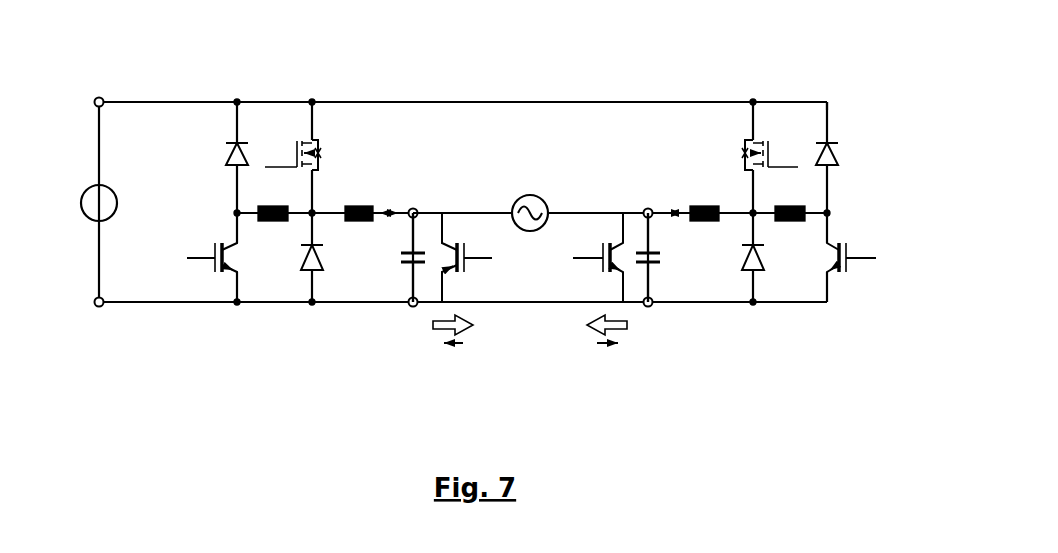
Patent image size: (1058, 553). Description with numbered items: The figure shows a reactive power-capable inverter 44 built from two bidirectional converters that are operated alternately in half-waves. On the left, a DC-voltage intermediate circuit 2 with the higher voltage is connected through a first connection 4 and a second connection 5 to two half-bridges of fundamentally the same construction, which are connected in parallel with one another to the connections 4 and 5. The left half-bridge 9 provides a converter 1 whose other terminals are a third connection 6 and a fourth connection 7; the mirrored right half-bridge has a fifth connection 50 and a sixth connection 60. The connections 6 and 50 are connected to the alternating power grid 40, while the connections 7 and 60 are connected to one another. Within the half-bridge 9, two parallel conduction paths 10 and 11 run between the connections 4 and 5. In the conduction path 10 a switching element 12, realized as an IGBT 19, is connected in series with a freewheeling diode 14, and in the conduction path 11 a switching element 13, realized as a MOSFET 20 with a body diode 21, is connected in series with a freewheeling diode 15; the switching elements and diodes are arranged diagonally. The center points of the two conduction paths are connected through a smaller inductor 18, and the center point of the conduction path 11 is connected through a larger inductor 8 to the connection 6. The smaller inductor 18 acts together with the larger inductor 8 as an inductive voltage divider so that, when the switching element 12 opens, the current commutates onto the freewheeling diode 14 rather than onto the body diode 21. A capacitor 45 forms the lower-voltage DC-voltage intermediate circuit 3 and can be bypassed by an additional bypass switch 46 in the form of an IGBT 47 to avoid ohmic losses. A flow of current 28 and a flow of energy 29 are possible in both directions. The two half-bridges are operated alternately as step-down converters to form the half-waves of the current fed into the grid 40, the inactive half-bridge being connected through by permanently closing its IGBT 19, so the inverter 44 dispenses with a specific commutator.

The converter 1 is at (198, 224).
The DC-voltage intermediate circuit 2 is at (82, 134).
The DC-voltage intermediate circuit 3 is at (397, 258).
The first connection 4 is at (102, 95).
The second connection 5 is at (97, 308).
The third connection 6 is at (416, 207).
The fourth connection 7 is at (417, 308).
The larger (first) inductor 8 is at (350, 204).
The half-bridge 9 is at (352, 94).
The conduction path 10 is at (237, 96).
The conduction path 11 is at (313, 96).
The switching element 12 is at (219, 284).
The switching element 13 is at (293, 134).
The freewheeling diode 14 is at (228, 152).
The freewheeling diode 15 is at (303, 278).
The smaller (second) inductor 18 is at (272, 222).
The IGBT 19 is at (204, 284).
The MOSFET 20 is at (326, 148).
The body diode 21 is at (318, 154).
The flow of current 28 is at (389, 206).
The flow of energy 29 is at (459, 354).
The alternating power grid 40 is at (531, 236).
The reactive power-capable inverter 44 is at (661, 93).
The capacitor 45 is at (404, 272).
The bypass switch 46 is at (450, 232).
The IGBT 47 is at (473, 238).
The fifth connection 50 is at (648, 207).
The sixth connection 60 is at (650, 308).